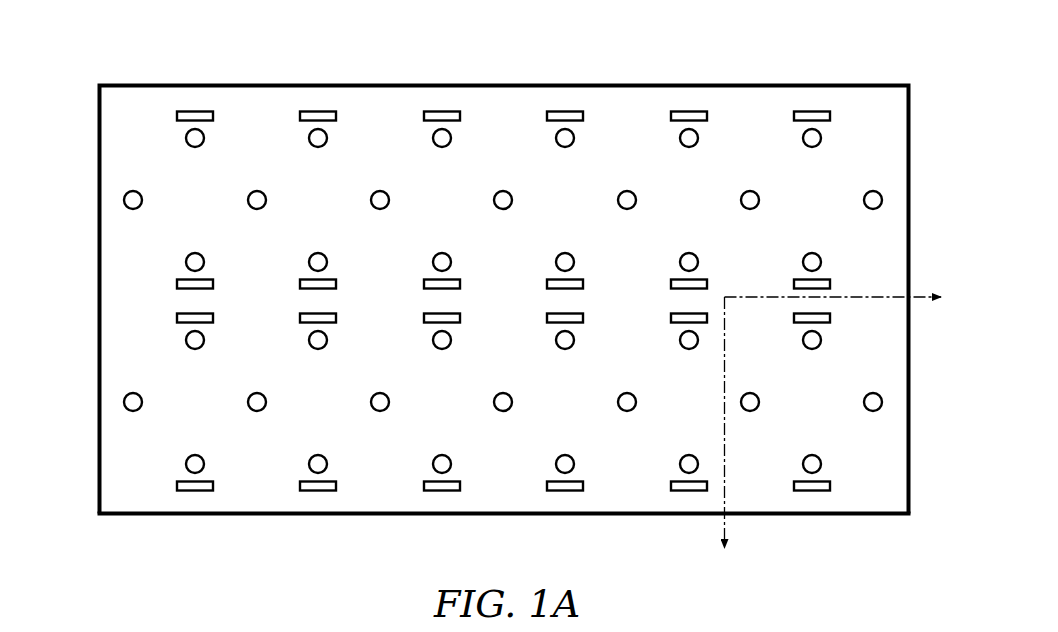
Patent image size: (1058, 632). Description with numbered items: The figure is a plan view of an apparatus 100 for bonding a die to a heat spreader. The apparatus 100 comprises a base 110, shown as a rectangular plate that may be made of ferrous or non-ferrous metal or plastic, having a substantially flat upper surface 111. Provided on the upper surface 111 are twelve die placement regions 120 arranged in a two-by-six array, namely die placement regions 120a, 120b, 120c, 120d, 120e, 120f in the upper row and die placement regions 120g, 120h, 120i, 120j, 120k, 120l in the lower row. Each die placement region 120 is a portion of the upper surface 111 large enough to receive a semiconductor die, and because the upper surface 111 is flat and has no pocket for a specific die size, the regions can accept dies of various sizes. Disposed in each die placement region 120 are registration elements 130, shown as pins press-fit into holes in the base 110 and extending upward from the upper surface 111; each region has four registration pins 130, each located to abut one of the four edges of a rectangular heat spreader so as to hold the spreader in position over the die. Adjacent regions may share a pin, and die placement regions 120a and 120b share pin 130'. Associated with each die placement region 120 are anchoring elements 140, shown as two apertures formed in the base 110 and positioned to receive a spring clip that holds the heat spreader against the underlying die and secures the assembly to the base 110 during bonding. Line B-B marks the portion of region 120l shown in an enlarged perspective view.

The apparatus 100 is at (500, 302).
The base 110 is at (866, 82).
The upper surface 111 is at (873, 497).
The die placement regions 120 is at (503, 264).
The die placement region 120a is at (195, 200).
The die placement region 120b is at (318, 200).
The die placement region 120c is at (442, 200).
The die placement region 120d is at (565, 200).
The die placement region 120e is at (689, 200).
The die placement region 120f is at (812, 200).
The die placement region 120g is at (195, 402).
The die placement region 120h is at (318, 402).
The die placement region 120i is at (442, 402).
The die placement region 120j is at (565, 402).
The die placement region 120k is at (689, 402).
The die placement region 120l is at (812, 402).
The registration elements 130 is at (503, 314).
The pin 130' is at (277, 129).
The anchoring elements 140 is at (706, 283).